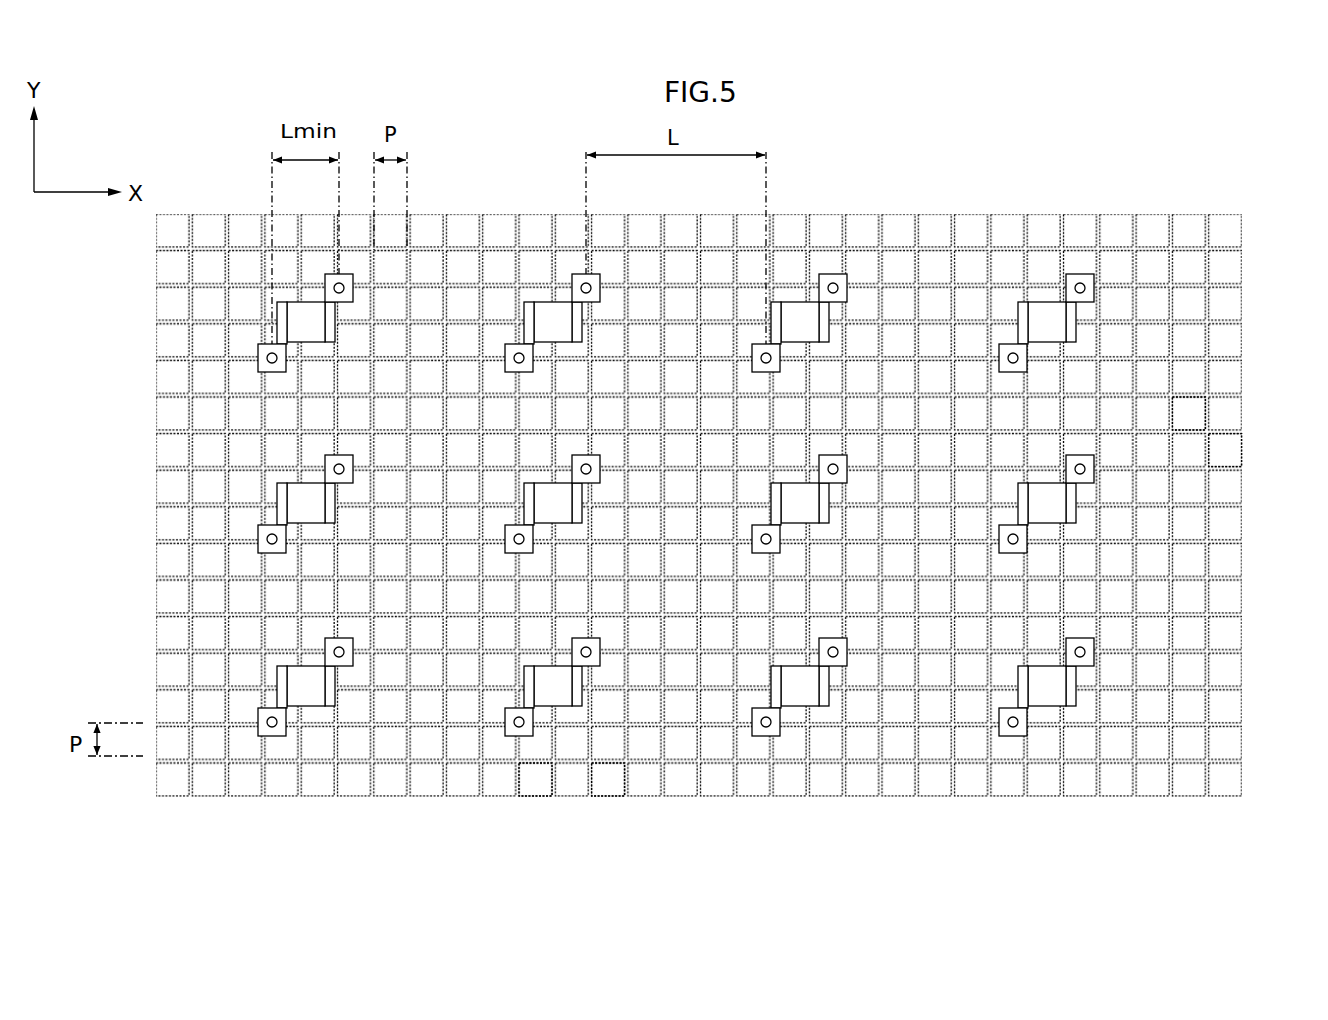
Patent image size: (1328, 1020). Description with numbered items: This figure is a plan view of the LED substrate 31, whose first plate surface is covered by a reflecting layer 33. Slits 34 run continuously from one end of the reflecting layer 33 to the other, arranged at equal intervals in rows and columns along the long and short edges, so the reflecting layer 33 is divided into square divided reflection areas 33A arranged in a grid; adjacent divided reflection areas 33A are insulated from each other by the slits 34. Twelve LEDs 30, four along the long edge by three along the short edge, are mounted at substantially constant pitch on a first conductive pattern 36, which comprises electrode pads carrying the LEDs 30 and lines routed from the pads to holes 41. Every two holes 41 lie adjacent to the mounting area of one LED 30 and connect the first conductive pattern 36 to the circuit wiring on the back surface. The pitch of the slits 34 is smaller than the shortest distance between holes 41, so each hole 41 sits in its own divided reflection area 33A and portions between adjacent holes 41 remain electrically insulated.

The LED 30 is at (302, 690).
The LED substrate 31 is at (1222, 173).
The reflecting layer 33 is at (637, 875).
The divided reflection area 33A is at (537, 778).
The slit 34 is at (1220, 467).
The first conductive pattern 36 is at (1086, 650).
The hole 41 is at (1013, 732).